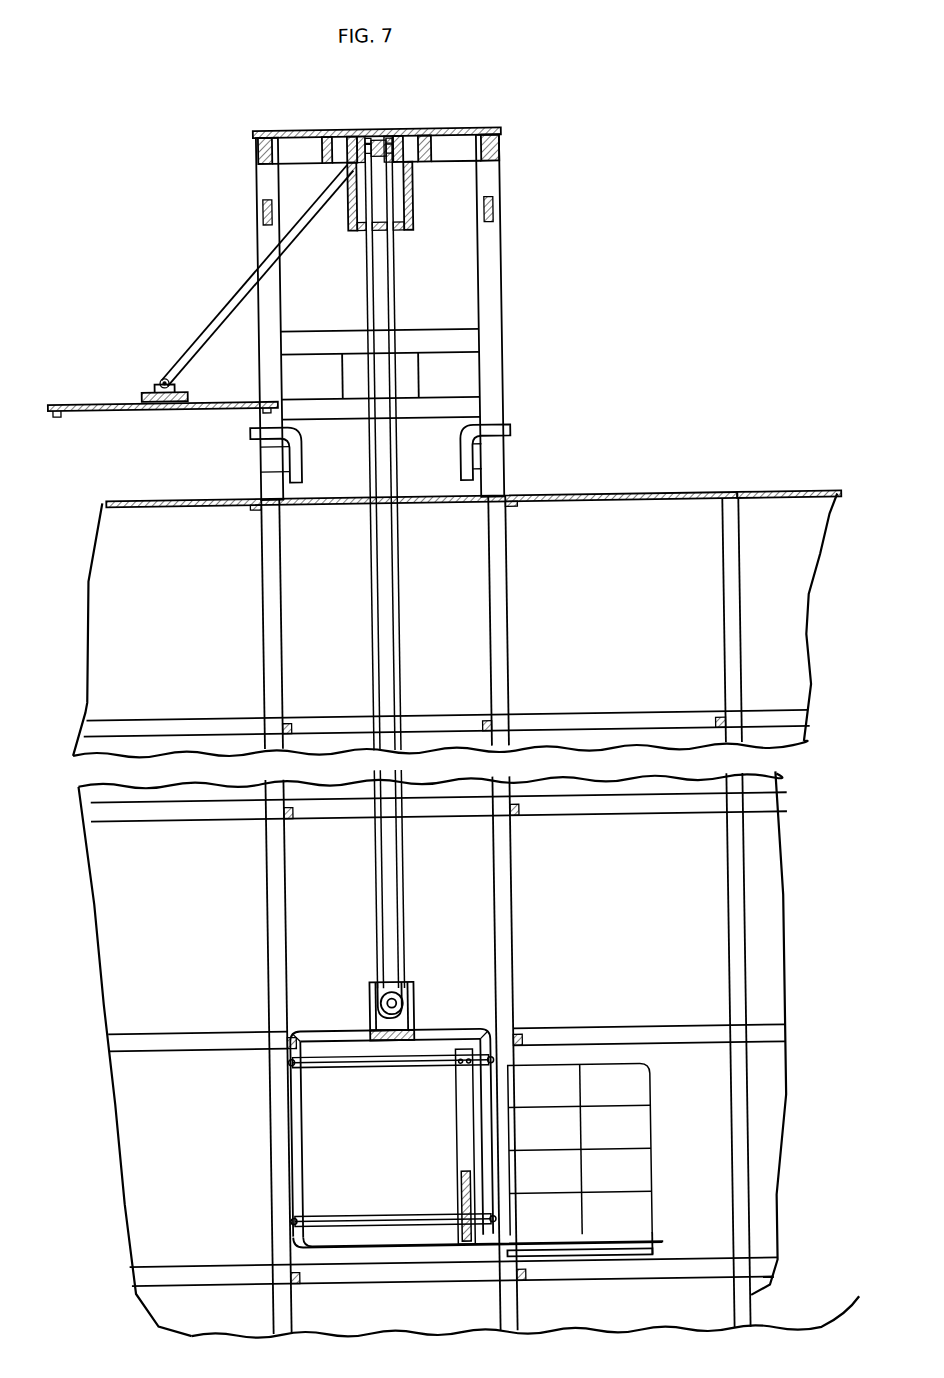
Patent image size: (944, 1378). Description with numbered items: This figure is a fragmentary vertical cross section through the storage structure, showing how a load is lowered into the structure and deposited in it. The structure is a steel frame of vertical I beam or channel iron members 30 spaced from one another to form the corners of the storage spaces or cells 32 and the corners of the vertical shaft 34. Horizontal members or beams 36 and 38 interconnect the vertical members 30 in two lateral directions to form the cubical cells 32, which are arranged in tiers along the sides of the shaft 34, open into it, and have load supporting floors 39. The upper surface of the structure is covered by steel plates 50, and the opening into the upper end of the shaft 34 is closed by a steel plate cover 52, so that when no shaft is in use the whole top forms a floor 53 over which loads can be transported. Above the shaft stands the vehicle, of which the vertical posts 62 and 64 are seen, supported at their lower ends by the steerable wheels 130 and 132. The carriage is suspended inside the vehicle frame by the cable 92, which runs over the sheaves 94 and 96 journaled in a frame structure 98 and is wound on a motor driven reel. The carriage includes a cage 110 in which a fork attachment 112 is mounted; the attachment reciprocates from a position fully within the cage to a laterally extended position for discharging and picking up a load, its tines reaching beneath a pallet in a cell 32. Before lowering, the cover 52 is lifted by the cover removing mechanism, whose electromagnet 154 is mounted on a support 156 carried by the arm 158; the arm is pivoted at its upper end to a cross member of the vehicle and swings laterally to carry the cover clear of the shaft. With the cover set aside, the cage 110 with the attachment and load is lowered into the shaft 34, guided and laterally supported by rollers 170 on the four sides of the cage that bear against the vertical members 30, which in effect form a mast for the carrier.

The vertical members 30 is at (272, 632).
The spaces or cells 32 is at (148, 604).
The vertical shaft 34 is at (467, 536).
The horizontal members 36 is at (440, 812).
The horizontal members 38 is at (283, 711).
The load supporting floors 39 is at (186, 720).
The steel plates 50 is at (659, 496).
The steel plate cover 52 is at (105, 406).
The floor 53 is at (764, 500).
The vertical post 62 is at (512, 252).
The vertical post 64 is at (269, 244).
The cable 92 is at (373, 600).
The sheave 94 is at (354, 136).
The sheave 96 is at (408, 136).
The frame structure 98 is at (387, 136).
The cage 110 is at (436, 1029).
The fork attachment 112 is at (548, 1245).
The wheel 130 is at (515, 450).
The wheel 132 is at (263, 458).
The electromagnet 154 is at (163, 395).
The support 156 is at (190, 387).
The arm 158 is at (224, 320).
The rollers 170 is at (283, 1063).